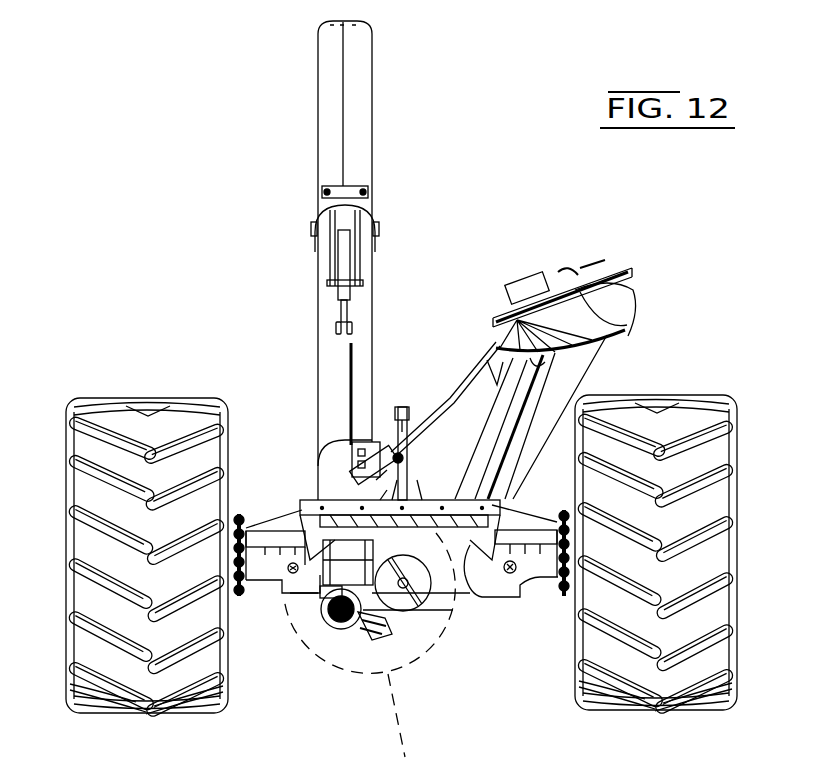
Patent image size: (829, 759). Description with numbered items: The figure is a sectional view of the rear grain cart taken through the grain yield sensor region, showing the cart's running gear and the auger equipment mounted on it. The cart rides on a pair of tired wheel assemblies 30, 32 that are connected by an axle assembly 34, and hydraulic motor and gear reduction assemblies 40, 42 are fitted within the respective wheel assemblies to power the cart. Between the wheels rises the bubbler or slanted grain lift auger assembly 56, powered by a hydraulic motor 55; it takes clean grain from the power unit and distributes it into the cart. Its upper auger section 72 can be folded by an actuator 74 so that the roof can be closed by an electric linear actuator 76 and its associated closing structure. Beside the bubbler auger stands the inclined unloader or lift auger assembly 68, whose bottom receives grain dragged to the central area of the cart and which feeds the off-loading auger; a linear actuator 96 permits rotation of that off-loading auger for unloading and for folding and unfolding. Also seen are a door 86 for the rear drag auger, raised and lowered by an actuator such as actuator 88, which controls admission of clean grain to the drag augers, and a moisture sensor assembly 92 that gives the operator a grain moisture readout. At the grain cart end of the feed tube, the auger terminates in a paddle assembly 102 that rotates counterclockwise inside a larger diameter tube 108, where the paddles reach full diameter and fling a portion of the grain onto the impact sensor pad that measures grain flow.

The tired wheel assembly 30 is at (668, 712).
The tired wheel assembly 32 is at (125, 712).
The axle assembly 34 is at (544, 576).
The hydraulic motor and gear reduction assembly 40 is at (566, 508).
The hydraulic motor and gear reduction assembly 42 is at (236, 602).
The hydraulic motor 55 is at (322, 620).
The bubbler grain lift auger assembly 56 is at (316, 92).
The unloader (lift) auger assembly 68 is at (567, 378).
The upper auger section 72 is at (330, 148).
The actuator 74 is at (340, 262).
The electric linear actuator 76 is at (327, 357).
The door 86 is at (425, 498).
The actuator 88 is at (401, 406).
The moisture sensor assembly 92 is at (350, 477).
The linear actuator 96 is at (521, 290).
The paddle assembly 102 is at (430, 610).
The larger diameter tube 108 is at (430, 603).